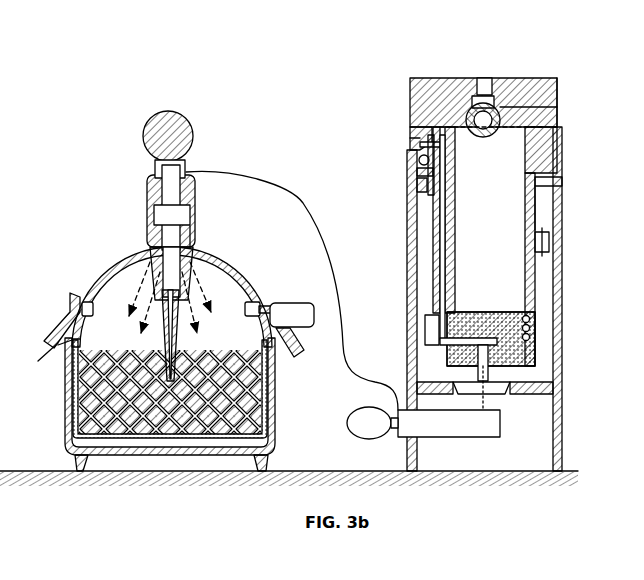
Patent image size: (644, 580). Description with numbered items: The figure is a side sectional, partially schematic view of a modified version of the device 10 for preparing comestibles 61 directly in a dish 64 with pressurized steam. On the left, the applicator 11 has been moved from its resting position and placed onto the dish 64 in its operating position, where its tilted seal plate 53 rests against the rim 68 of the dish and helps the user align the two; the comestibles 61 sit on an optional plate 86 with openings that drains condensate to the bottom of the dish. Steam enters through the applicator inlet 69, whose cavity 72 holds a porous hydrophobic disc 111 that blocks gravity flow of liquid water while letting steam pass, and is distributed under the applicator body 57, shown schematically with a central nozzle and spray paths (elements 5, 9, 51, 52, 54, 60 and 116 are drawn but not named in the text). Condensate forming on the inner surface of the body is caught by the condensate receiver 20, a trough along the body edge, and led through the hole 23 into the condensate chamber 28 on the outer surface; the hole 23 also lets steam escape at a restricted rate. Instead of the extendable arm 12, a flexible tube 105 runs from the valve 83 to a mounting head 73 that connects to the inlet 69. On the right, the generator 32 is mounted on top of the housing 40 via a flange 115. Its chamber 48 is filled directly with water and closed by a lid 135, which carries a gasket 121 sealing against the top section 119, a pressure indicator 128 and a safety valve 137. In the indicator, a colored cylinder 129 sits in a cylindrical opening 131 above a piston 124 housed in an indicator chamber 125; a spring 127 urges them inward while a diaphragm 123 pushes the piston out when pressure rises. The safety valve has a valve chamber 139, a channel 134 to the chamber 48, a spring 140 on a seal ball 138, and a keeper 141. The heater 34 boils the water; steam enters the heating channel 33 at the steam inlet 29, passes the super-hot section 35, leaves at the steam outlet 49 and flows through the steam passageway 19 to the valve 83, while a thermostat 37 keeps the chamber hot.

The fitting / collar 5 is at (126, 255).
The dome wall 9 is at (96, 266).
The device 10 is at (233, 80).
The applicator 11 is at (165, 285).
The extendable member or arm 12 is at (303, 203).
The steam passageway 19 is at (488, 401).
The condensate receiver 20 is at (84, 302).
The hole 23 is at (257, 300).
The condensate chamber 28 is at (300, 300).
The steam inlet 29 is at (452, 150).
The generator 32 is at (432, 258).
The steam heating channel 33 is at (441, 285).
The heater 34 is at (426, 336).
The super-hot section 35 is at (452, 333).
The thermostat 37 is at (540, 257).
The housing 40 is at (563, 336).
The chamber 48 is at (522, 268).
The steam outlet 49 is at (556, 383).
The inlet tube 51 is at (60, 330).
The connector 52 is at (58, 346).
The seal plate 53 is at (286, 358).
The tube end 54 is at (36, 356).
The applicator body 57 is at (226, 266).
The needle 60 is at (166, 353).
The comestibles 61 is at (266, 386).
The dish 64 is at (177, 404).
The rim 68 is at (75, 335).
The applicator inlet 69 is at (137, 200).
The cavity 72 is at (156, 210).
The mounting head 73 is at (150, 170).
The valve 83 is at (366, 439).
The plate 86 is at (78, 453).
The flexible or extendable tube 105 is at (279, 190).
The porous hydrophobic disc 111 is at (190, 214).
The flange 115 is at (560, 218).
The spray 116 is at (180, 356).
The top section 119 is at (558, 180).
The gasket 121 is at (557, 148).
The diaphragm 123 is at (490, 140).
The piston 124 is at (548, 127).
The indicator chamber 125 is at (505, 117).
The spring 127 is at (558, 79).
The pressure indicator 128 is at (506, 80).
The colored cylinder 129 is at (490, 80).
The cylindrical opening 131 is at (481, 93).
The channel 134 is at (413, 134).
The lid 135 is at (446, 73).
The safety valve 137 is at (410, 137).
The seal ball 138 is at (420, 146).
The valve chamber 139 is at (418, 159).
The spring 140 is at (416, 172).
The bolt base 141 is at (412, 190).